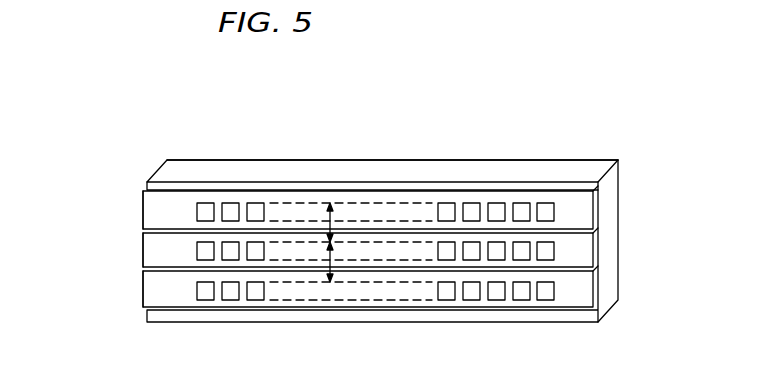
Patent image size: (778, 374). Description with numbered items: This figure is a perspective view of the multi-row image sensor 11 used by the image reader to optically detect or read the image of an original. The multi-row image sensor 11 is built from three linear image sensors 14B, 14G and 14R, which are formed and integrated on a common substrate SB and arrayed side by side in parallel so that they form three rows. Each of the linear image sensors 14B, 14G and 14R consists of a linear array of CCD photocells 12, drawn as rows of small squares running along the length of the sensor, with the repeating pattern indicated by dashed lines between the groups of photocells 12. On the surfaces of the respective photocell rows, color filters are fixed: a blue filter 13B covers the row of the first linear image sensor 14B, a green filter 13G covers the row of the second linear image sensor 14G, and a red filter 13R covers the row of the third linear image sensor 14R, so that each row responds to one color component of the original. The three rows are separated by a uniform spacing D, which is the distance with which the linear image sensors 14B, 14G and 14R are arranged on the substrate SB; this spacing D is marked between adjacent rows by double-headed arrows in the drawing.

The multi-row image sensor 11 is at (490, 150).
The common substrate SB is at (562, 167).
The CCD photocells 12 is at (254, 208).
The blue filter 13B is at (578, 217).
The green filter 13G is at (578, 253).
The red filter 13R is at (576, 295).
The linear image sensor 14B is at (170, 213).
The linear image sensor 14G is at (168, 257).
The linear image sensor 14R is at (174, 297).
The spacing D is at (332, 223).